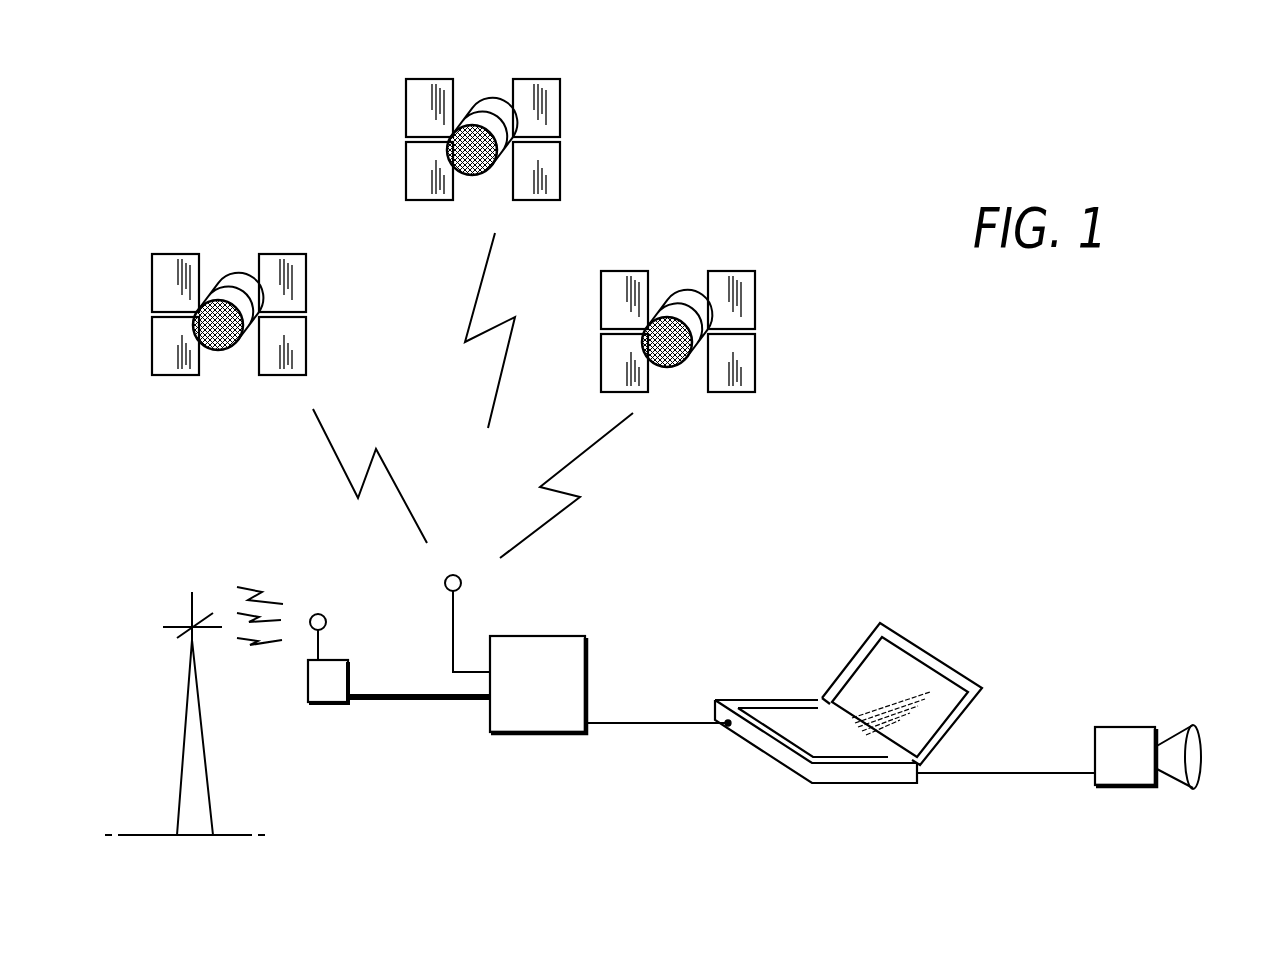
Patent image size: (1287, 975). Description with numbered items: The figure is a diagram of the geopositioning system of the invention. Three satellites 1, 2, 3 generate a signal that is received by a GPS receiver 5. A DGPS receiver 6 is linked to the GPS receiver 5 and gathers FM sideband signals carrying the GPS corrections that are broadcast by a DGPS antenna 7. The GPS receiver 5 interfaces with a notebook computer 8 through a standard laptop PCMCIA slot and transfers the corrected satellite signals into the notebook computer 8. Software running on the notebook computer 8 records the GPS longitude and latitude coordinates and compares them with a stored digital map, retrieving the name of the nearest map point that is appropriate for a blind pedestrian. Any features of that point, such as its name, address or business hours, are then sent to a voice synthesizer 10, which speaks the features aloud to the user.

The satellite 1 is at (226, 258).
The satellite 2 is at (486, 84).
The satellite 3 is at (683, 281).
The GPS receiver 5 is at (562, 636).
The DGPS receiver 6 is at (338, 660).
The DGPS antenna 7 is at (188, 685).
The notebook computer 8 is at (918, 648).
The voice synthesizer 10 is at (1130, 727).